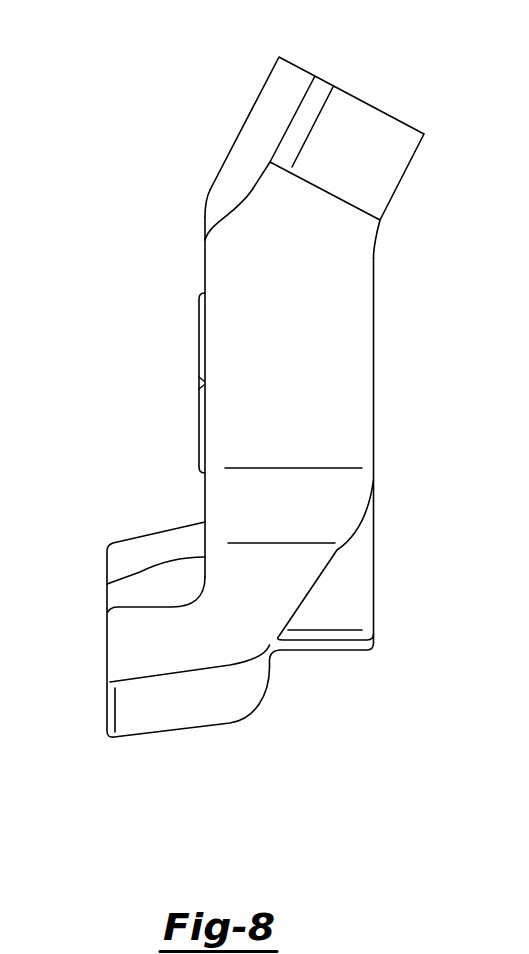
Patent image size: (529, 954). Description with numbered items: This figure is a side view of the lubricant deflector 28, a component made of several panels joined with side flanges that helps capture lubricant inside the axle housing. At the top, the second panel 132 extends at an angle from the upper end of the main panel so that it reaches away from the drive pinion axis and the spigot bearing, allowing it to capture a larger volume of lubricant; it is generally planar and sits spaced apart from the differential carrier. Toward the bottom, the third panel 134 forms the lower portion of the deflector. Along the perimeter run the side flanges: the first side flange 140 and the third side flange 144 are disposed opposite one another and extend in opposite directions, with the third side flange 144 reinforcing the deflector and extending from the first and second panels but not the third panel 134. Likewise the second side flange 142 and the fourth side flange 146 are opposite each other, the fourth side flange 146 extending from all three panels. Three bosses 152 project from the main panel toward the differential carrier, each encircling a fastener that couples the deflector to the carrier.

The lubricant deflector 28 is at (434, 107).
The second panel 132 is at (315, 76).
The third panel 134 is at (170, 527).
The first side flange 140 is at (251, 110).
The second side flange 142 is at (107, 647).
The third side flange 144 is at (400, 182).
The fourth side flange 146 is at (375, 440).
The boss 152 is at (198, 425).